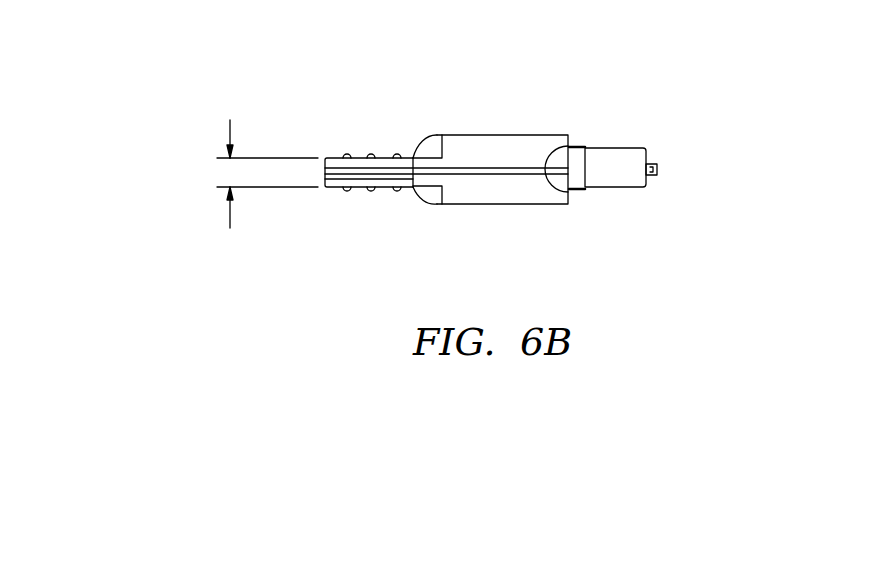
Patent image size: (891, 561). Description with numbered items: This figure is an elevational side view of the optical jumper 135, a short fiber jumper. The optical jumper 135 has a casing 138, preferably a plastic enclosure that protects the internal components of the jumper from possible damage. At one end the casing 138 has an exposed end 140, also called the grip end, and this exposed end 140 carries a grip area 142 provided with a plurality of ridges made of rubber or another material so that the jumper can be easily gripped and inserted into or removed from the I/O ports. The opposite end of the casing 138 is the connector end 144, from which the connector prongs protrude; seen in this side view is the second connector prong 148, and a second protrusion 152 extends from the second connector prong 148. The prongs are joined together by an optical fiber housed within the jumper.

The optical jumper 135 is at (538, 60).
The casing 138 is at (518, 193).
The exposed end 140 is at (208, 138).
The grip area 142 is at (364, 155).
The connector end 144 is at (730, 162).
The second connector prong 148 is at (623, 157).
The second protrusion 152 is at (655, 176).